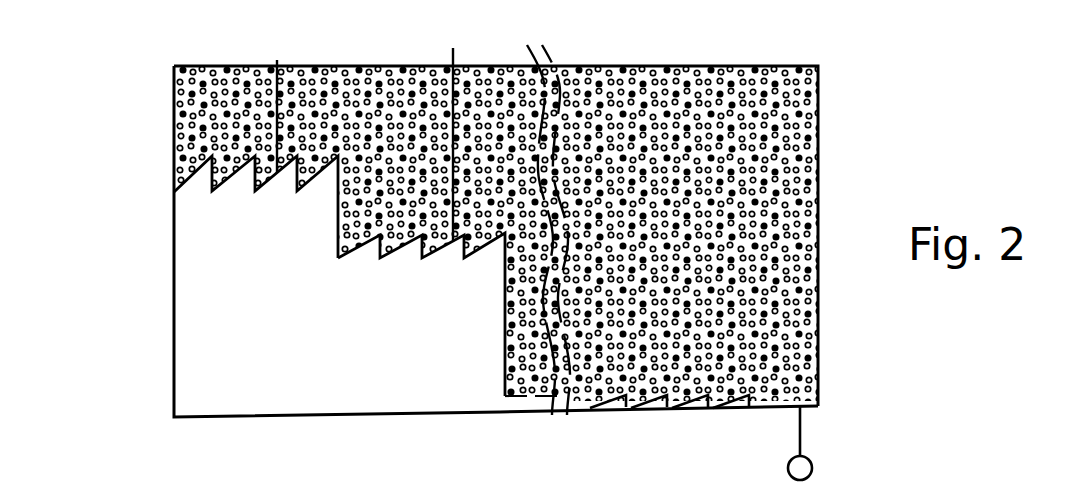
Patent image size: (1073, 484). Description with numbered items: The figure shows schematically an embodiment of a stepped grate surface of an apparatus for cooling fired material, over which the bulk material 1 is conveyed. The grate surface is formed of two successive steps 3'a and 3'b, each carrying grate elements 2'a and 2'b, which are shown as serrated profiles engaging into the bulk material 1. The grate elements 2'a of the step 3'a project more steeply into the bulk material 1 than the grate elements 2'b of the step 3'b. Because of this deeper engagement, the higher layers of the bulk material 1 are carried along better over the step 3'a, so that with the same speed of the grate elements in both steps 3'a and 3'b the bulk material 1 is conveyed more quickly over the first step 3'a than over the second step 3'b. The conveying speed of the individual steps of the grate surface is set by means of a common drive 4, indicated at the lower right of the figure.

The bulk material 1 is at (637, 157).
The grate elements of the step 3'a 2'a is at (274, 91).
The grate elements of the step 3'b 2'b is at (445, 125).
The step 3'a is at (187, 207).
The step 3'b is at (300, 314).
The common drive 4 is at (812, 468).